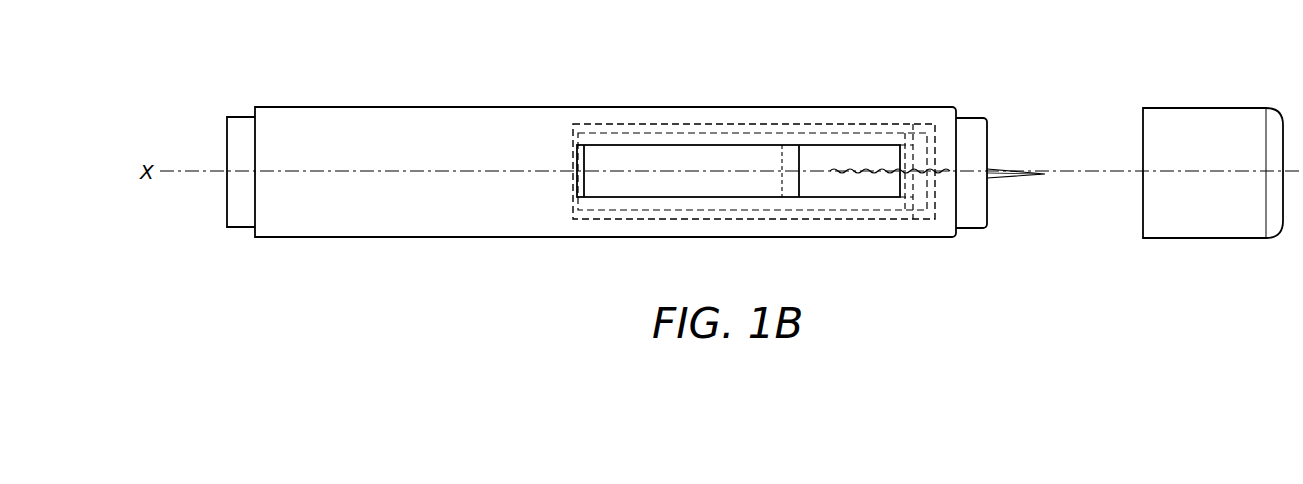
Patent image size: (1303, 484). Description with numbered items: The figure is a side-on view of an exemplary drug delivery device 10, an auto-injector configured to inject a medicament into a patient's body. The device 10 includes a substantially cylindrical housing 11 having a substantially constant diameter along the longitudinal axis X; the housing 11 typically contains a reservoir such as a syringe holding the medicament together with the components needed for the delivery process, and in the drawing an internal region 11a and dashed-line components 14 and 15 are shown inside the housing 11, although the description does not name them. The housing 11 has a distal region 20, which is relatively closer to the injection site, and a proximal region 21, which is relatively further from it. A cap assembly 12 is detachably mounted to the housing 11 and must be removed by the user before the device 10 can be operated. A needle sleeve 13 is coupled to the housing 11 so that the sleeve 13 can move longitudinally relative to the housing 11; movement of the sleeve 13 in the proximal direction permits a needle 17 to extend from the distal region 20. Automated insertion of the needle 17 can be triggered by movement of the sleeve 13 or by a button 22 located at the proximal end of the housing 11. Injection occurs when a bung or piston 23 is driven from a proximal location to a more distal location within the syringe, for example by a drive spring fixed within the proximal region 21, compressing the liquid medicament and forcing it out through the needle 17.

The drug delivery device 10 is at (924, 62).
The housing 11 is at (783, 118).
The container end wall 11a is at (638, 145).
The cap assembly 12 is at (1208, 118).
The needle sleeve 13 is at (977, 125).
The outer sleeve (dashed) 14 is at (638, 216).
The inner sleeve (dashed) 15 is at (707, 210).
The needle 17 is at (1022, 172).
The distal region 20 is at (945, 237).
The proximal region 21 is at (272, 237).
The button 22 is at (238, 227).
The bung or piston 23 is at (800, 185).